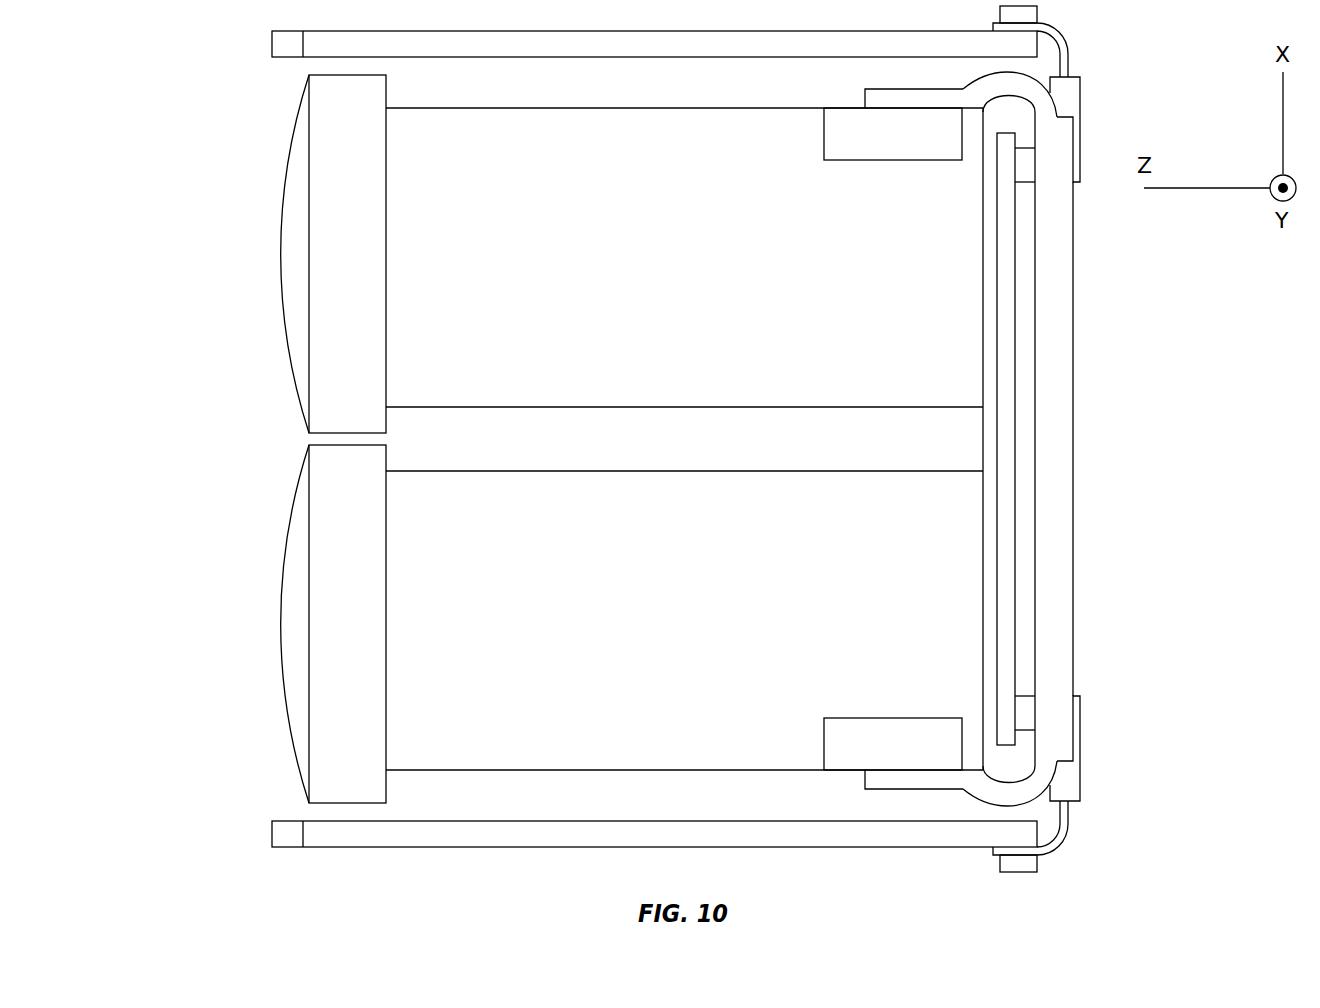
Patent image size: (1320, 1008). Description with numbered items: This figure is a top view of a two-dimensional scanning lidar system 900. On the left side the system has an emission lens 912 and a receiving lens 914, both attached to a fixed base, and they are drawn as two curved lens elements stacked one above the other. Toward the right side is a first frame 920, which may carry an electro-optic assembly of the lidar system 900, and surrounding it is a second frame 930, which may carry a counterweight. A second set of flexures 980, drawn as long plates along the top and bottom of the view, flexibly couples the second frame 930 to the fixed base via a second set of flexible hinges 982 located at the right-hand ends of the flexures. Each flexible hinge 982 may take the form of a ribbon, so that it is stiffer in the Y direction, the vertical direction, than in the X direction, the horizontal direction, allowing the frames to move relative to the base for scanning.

The two-dimensional scanning lidar system 900 is at (206, 100).
The emission lens 912 is at (295, 285).
The receiving lens 914 is at (295, 621).
The first frame 920 is at (1007, 248).
The second frame 930 is at (1048, 621).
The second set of flexures 980 is at (423, 832).
The second set of flexible hinges 982 is at (1070, 830).